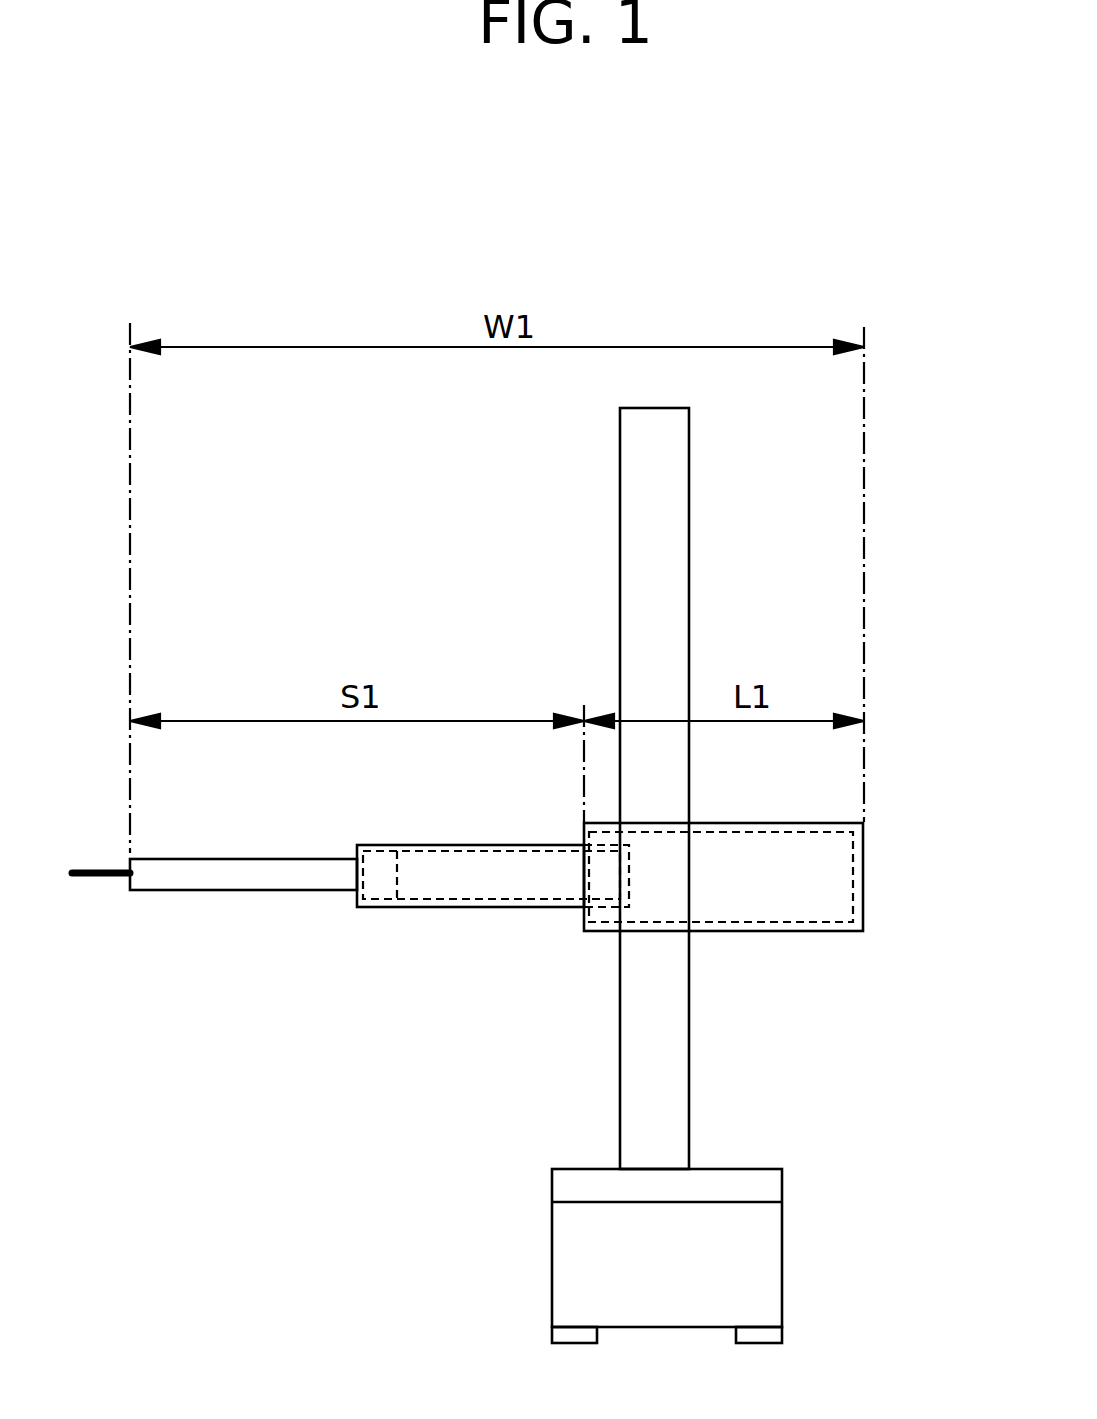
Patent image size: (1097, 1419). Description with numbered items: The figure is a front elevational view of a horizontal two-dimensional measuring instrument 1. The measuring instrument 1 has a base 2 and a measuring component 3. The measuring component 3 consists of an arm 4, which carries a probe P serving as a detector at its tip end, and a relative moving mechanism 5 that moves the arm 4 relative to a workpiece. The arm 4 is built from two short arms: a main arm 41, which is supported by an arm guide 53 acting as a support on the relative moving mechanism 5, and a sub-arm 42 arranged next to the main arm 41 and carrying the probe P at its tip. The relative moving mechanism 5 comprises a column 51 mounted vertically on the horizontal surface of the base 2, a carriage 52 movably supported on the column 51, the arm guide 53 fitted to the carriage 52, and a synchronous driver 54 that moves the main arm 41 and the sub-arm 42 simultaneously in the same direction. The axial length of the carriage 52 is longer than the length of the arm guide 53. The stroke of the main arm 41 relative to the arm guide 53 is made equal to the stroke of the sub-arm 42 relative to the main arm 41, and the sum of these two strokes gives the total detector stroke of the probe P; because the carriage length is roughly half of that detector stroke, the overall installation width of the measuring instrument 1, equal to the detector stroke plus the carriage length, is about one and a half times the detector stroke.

The measuring instrument 1 is at (847, 267).
The base 2 is at (572, 1277).
The measuring component 3 is at (455, 1077).
The arm 4 is at (380, 987).
The main arm 41 is at (388, 907).
The sub-arm 42 is at (245, 892).
The relative moving mechanism 5 is at (890, 1093).
The column 51 is at (670, 1118).
The carriage 52 is at (807, 931).
The arm guide 53 is at (747, 923).
The synchronous driver 54 is at (470, 900).
The probe P is at (100, 878).